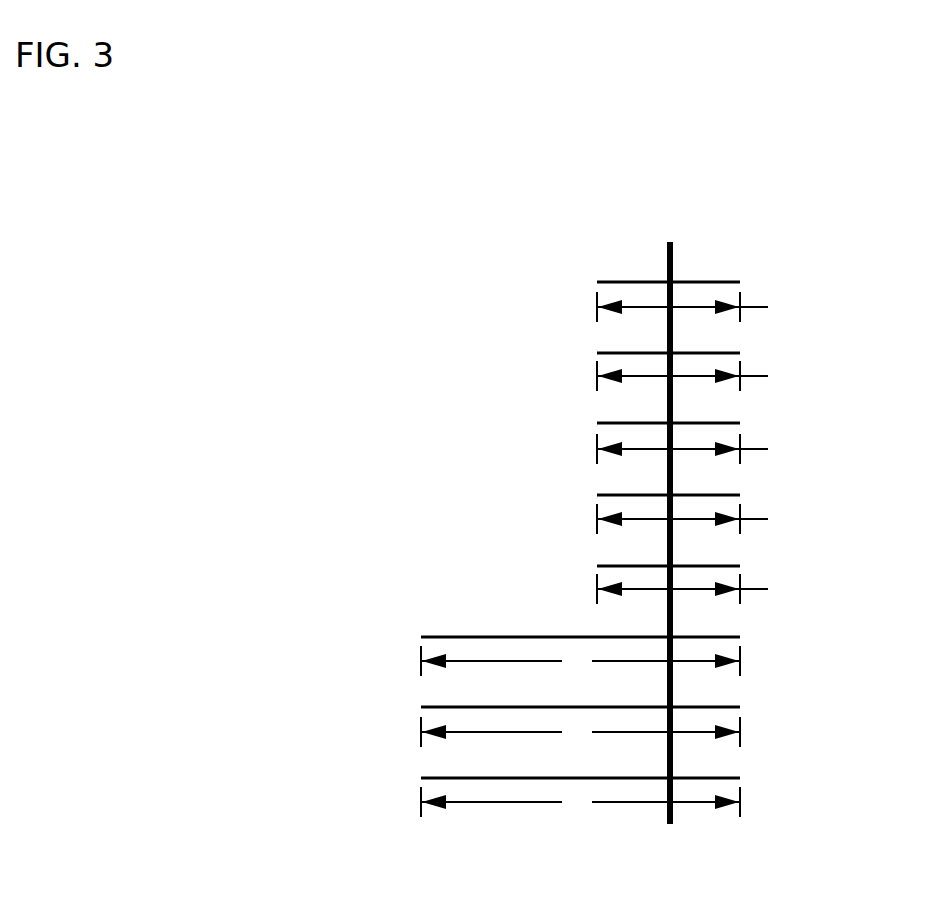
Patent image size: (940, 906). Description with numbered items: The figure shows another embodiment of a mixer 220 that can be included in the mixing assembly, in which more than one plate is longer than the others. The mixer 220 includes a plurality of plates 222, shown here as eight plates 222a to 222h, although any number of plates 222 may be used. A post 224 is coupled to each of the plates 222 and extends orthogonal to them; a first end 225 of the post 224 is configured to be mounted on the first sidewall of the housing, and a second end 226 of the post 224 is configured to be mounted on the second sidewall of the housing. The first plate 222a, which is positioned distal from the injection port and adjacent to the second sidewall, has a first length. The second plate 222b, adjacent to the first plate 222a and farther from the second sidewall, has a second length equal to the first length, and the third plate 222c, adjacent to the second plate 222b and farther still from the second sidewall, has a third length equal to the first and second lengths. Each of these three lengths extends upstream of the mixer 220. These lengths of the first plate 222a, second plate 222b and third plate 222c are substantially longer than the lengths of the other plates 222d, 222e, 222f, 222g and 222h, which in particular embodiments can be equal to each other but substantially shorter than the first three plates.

The mixer 220 is at (762, 220).
The plurality of plates 222 is at (797, 490).
The first plate 222a is at (432, 778).
The second plate 222b is at (440, 707).
The third plate 222c is at (457, 637).
The plate 222d is at (616, 566).
The plate 222e is at (616, 495).
The plate 222f is at (616, 423).
The plate 222g is at (616, 353).
The plate 222h is at (616, 282).
The post 224 is at (673, 760).
The first end 225 is at (667, 243).
The second end 226 is at (673, 823).